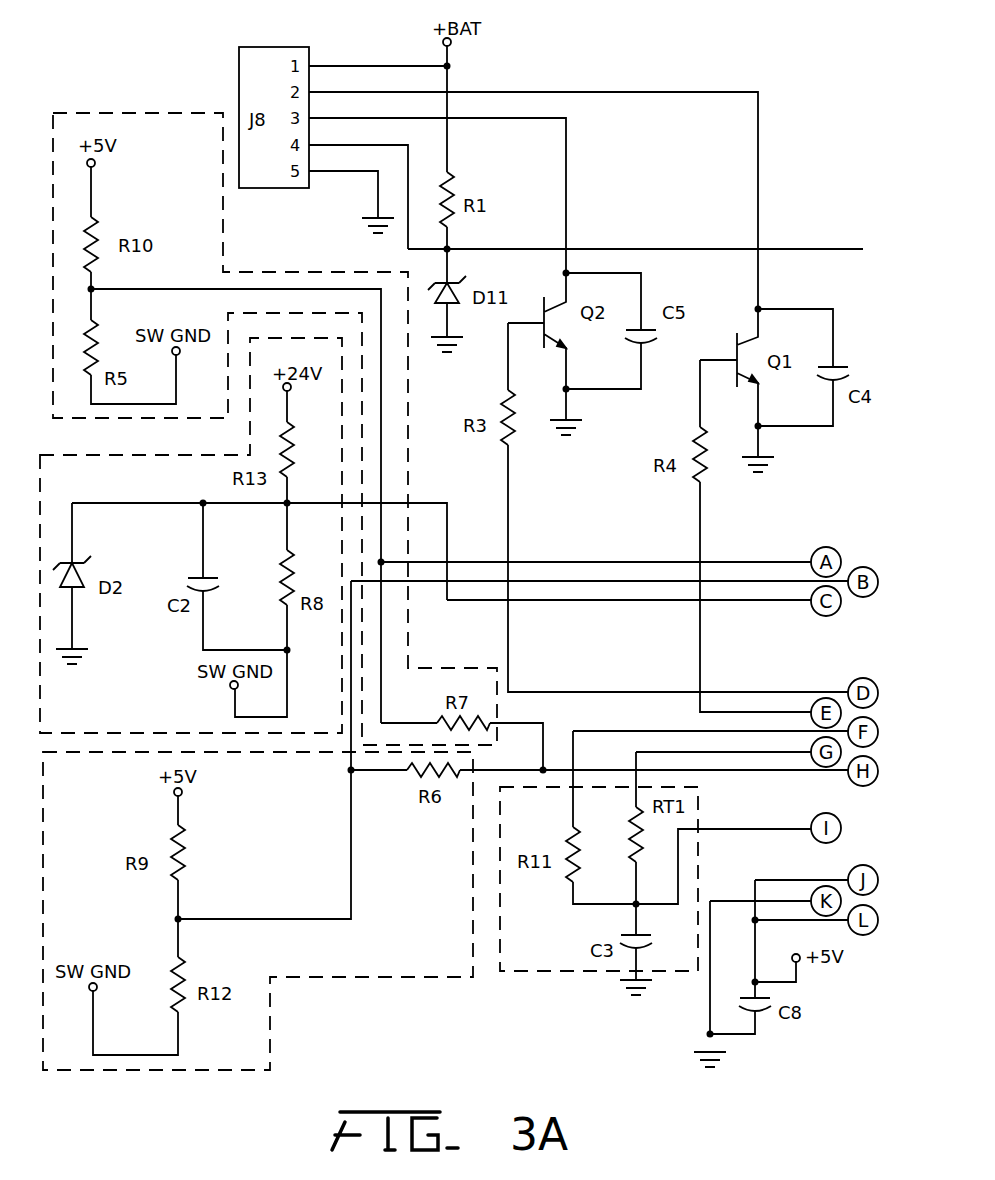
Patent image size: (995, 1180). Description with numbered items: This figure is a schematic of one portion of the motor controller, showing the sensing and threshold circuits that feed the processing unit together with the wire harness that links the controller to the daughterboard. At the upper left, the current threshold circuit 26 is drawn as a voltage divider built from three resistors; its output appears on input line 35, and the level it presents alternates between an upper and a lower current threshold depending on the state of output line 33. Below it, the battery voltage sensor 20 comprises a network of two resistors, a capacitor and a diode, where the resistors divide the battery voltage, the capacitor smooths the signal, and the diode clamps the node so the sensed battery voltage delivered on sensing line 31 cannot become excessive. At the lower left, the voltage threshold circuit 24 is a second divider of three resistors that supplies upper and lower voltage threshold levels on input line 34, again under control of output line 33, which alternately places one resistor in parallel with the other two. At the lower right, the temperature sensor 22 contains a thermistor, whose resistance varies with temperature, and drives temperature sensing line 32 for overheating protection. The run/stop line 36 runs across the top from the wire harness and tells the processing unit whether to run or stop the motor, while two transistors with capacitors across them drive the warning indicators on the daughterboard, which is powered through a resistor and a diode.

The battery voltage sensor 20 is at (118, 455).
The temperature sensor 22 is at (543, 971).
The voltage threshold circuit 24 is at (315, 978).
The current threshold circuit 26 is at (120, 113).
The sensing line 31 is at (745, 602).
The sensing line 32 is at (765, 752).
The output line 33 is at (723, 771).
The input line 34 is at (720, 582).
The input line 35 is at (552, 560).
The run/stop line 36 is at (793, 250).